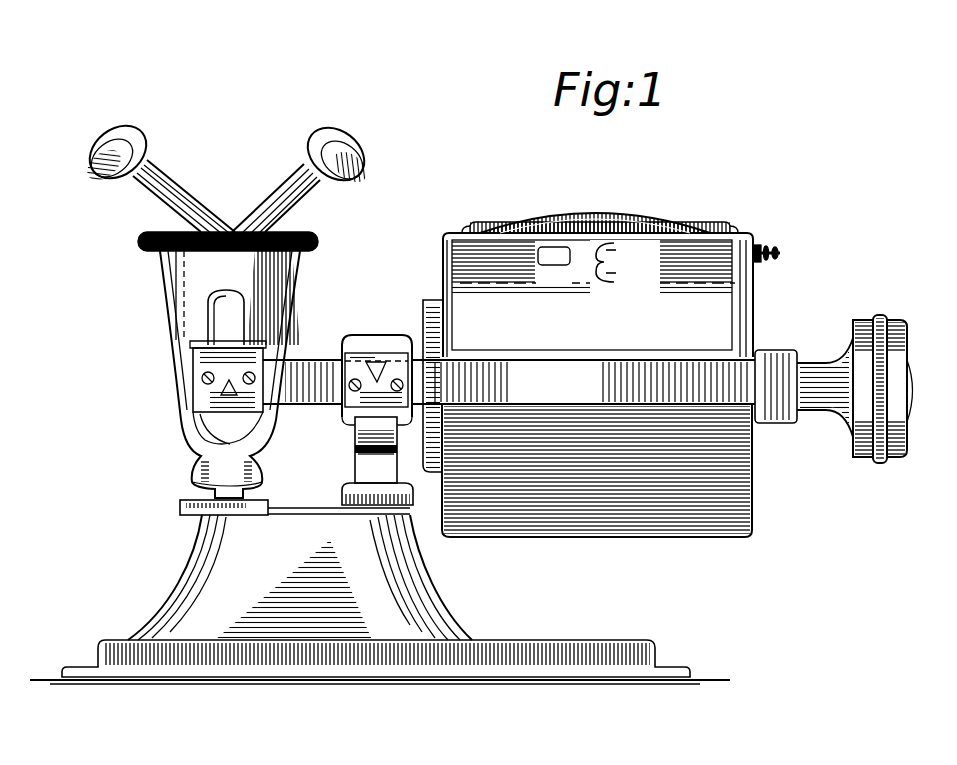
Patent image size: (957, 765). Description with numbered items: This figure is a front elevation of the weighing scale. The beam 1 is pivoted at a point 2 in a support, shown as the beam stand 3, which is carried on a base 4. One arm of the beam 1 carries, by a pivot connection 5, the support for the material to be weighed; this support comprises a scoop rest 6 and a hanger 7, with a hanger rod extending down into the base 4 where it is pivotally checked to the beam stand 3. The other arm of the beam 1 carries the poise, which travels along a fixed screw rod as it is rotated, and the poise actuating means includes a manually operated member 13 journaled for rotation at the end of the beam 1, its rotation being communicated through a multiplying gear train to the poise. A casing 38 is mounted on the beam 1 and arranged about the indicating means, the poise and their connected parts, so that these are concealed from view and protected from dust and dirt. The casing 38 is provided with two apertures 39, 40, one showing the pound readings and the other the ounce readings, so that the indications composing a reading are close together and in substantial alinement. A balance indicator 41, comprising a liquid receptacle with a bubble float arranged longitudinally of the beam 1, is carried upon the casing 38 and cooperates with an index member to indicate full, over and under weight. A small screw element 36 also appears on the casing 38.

The beam 1 is at (312, 366).
The pivot point 2 is at (376, 380).
The beam stand 3 is at (355, 448).
The base 4 is at (408, 598).
The pivot connection 5 is at (184, 416).
The scoop rest 6 is at (345, 133).
The hanger 7 is at (172, 320).
The manually operated member 13 is at (897, 330).
The screw 36 is at (784, 252).
The casing 38 is at (708, 288).
The aperture 39 is at (573, 207).
The aperture 40 is at (626, 207).
The balance indicator 41 is at (652, 207).